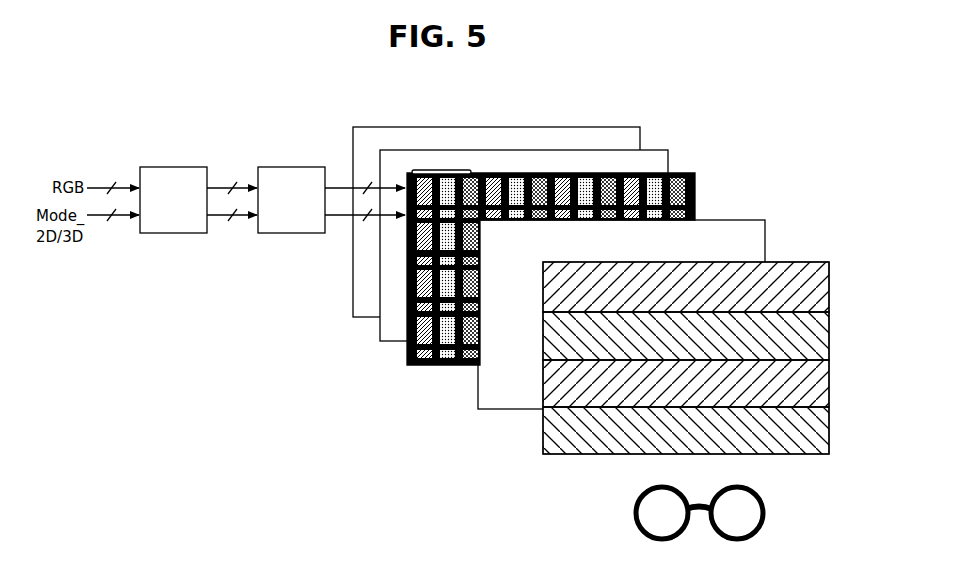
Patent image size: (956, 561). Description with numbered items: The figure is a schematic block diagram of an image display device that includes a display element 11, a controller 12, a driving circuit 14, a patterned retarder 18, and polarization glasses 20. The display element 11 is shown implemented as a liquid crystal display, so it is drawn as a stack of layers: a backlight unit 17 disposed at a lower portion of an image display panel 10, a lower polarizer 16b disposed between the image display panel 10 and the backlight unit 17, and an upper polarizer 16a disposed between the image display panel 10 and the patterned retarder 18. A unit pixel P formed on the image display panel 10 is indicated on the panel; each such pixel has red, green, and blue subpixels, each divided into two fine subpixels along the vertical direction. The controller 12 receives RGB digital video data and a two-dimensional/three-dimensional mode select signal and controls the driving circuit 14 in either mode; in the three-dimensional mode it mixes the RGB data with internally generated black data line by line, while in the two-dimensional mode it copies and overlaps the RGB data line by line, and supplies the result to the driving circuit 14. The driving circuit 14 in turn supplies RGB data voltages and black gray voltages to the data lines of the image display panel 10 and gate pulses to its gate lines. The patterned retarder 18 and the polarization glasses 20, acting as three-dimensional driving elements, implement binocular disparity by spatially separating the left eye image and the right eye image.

The controller 12 is at (173, 200).
The driving circuit 14 is at (291, 200).
The display element 11 is at (552, 242).
The backlight unit 17 is at (633, 127).
The lower polarizer 16b is at (656, 150).
The image display panel 10 is at (687, 173).
The unit pixel P is at (445, 171).
The upper polarizer 16a is at (735, 220).
The patterned retarder 18 is at (801, 262).
The polarization glasses 20 is at (760, 494).